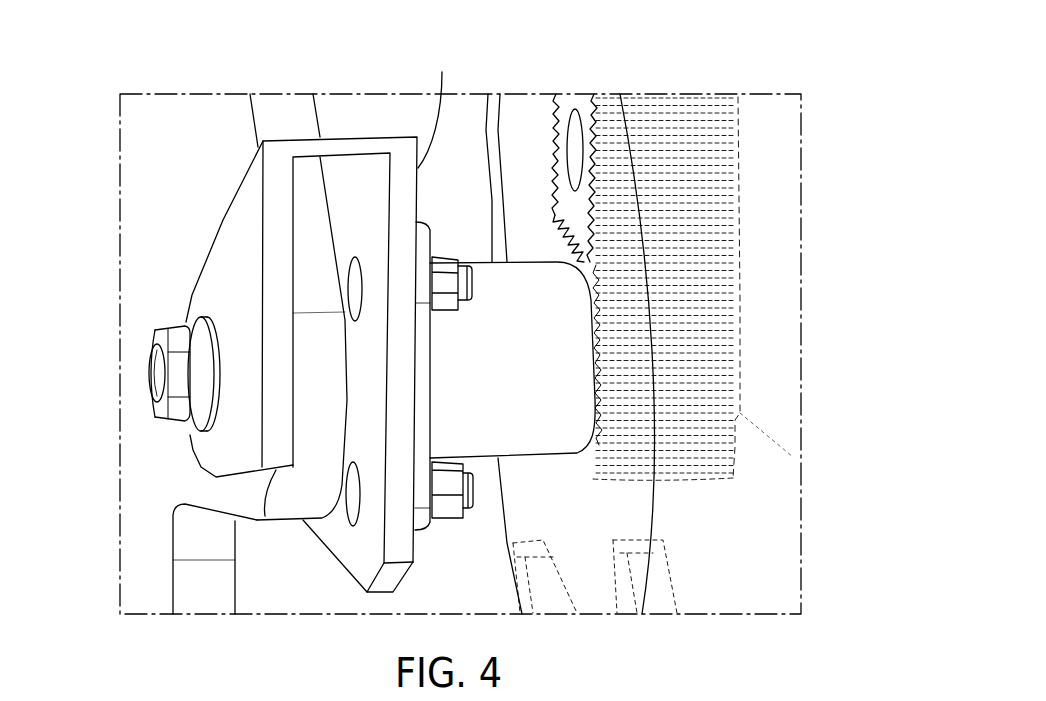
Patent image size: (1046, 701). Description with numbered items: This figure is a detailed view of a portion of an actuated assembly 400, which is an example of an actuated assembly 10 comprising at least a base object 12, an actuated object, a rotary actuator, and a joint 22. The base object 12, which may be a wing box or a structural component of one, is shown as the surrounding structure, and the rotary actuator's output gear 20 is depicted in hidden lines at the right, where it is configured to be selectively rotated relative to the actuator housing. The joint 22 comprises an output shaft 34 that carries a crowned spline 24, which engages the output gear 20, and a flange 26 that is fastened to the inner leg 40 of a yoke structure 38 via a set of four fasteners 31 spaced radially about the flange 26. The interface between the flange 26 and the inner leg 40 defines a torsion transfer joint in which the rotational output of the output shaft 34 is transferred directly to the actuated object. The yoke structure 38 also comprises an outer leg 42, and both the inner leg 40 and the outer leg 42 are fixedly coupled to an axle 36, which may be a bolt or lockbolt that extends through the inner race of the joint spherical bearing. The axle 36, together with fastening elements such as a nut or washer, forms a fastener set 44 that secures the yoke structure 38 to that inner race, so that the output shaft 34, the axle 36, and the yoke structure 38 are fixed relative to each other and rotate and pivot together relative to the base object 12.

The actuated assembly 10 is at (832, 67).
The actuated assembly 400 is at (832, 138).
The base object 12 is at (163, 147).
The output gear 20 is at (738, 187).
The joint 22 is at (392, 72).
The crowned spline 24 is at (742, 310).
The flange 26 is at (430, 543).
The fasteners 31 is at (418, 237).
The output shaft 34 is at (522, 466).
The axle 36 is at (167, 322).
The yoke structure 38 is at (297, 132).
The inner leg 40 is at (567, 233).
The outer leg 42 is at (223, 220).
The fastener set 44 is at (104, 379).